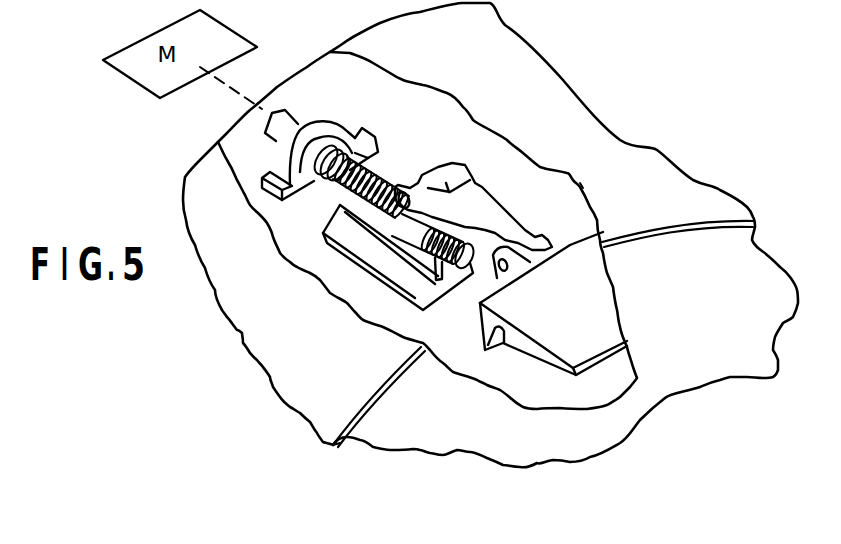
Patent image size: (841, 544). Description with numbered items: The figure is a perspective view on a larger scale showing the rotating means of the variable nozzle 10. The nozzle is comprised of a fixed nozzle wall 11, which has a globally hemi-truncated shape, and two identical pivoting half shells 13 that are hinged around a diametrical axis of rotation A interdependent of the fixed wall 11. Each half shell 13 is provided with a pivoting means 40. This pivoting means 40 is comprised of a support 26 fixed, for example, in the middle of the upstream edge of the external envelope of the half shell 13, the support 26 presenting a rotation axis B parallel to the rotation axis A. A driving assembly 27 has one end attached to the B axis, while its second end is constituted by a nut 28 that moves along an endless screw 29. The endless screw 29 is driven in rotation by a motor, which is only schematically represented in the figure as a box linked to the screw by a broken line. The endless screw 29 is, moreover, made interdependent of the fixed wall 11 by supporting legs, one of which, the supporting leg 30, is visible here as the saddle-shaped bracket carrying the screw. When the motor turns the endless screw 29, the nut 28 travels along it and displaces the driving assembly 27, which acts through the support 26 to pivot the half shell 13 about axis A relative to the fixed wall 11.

The variable nozzle 10 is at (373, 339).
The fixed nozzle wall 11 is at (253, 337).
The pivoting half shell 13 is at (393, 430).
The support 26 is at (547, 337).
The driving assembly 27 is at (495, 215).
The nut 28 is at (397, 262).
The endless screw 29 is at (390, 183).
The supporting leg 30 is at (320, 128).
The pivoting means 40 is at (583, 185).